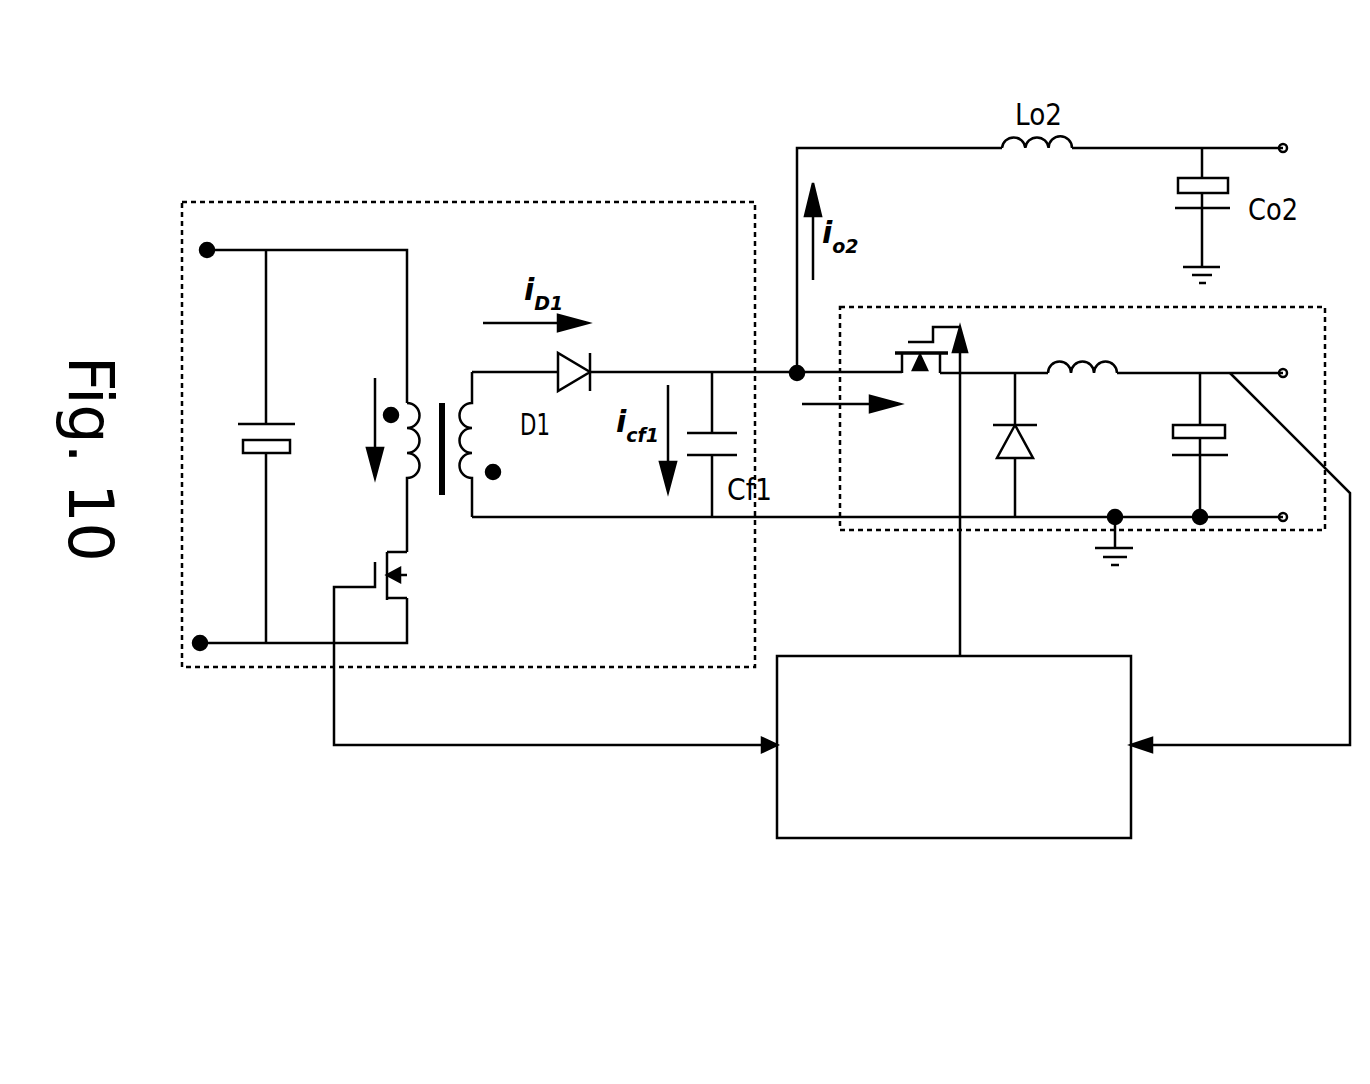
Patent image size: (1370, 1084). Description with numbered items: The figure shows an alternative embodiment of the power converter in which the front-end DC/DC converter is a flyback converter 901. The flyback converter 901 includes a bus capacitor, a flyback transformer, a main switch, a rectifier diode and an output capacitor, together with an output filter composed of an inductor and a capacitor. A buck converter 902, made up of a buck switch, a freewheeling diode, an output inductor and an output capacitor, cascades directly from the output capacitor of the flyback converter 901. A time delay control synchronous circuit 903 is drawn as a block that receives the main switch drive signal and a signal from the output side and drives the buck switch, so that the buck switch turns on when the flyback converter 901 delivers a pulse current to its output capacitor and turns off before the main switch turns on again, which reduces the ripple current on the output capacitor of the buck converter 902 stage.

The flyback converter 901 is at (553, 197).
The buck converter 902 is at (840, 517).
The time delay control synchronous circuit 903 is at (973, 838).